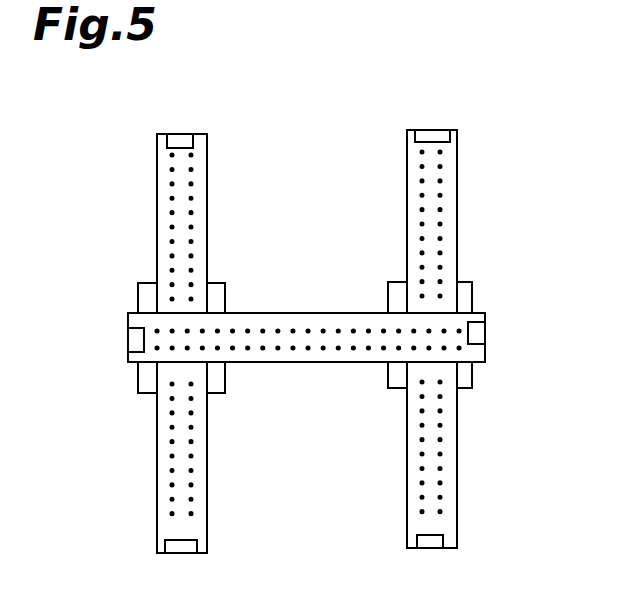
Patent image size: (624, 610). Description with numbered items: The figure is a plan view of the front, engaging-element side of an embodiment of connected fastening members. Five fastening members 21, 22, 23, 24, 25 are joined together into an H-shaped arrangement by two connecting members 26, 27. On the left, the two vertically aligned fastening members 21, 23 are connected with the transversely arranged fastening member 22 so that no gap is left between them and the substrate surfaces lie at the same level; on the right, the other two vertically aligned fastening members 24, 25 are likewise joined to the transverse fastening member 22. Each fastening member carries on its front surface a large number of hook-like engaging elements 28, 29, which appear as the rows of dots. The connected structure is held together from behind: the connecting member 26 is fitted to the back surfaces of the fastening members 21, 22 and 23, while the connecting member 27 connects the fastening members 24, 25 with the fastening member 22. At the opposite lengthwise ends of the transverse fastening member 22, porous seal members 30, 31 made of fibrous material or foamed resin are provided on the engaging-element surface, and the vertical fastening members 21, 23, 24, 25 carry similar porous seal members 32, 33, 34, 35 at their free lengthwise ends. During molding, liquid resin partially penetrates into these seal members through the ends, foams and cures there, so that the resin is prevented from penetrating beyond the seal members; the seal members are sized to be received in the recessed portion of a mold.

The fastening member 21 is at (157, 206).
The transversely arranged fastening member 22 is at (287, 363).
The fastening member 23 is at (157, 472).
The fastening member 24 is at (457, 217).
The fastening member 25 is at (457, 442).
The connecting member 26 is at (143, 286).
The connecting member 27 is at (472, 292).
The engaging elements 28 is at (412, 211).
The engaging elements 29 is at (200, 211).
The porous seal member 30 is at (128, 334).
The porous seal member 31 is at (476, 333).
The porous seal member 32 is at (181, 143).
The porous seal member 33 is at (198, 547).
The porous seal member 34 is at (438, 545).
The porous seal member 35 is at (447, 138).